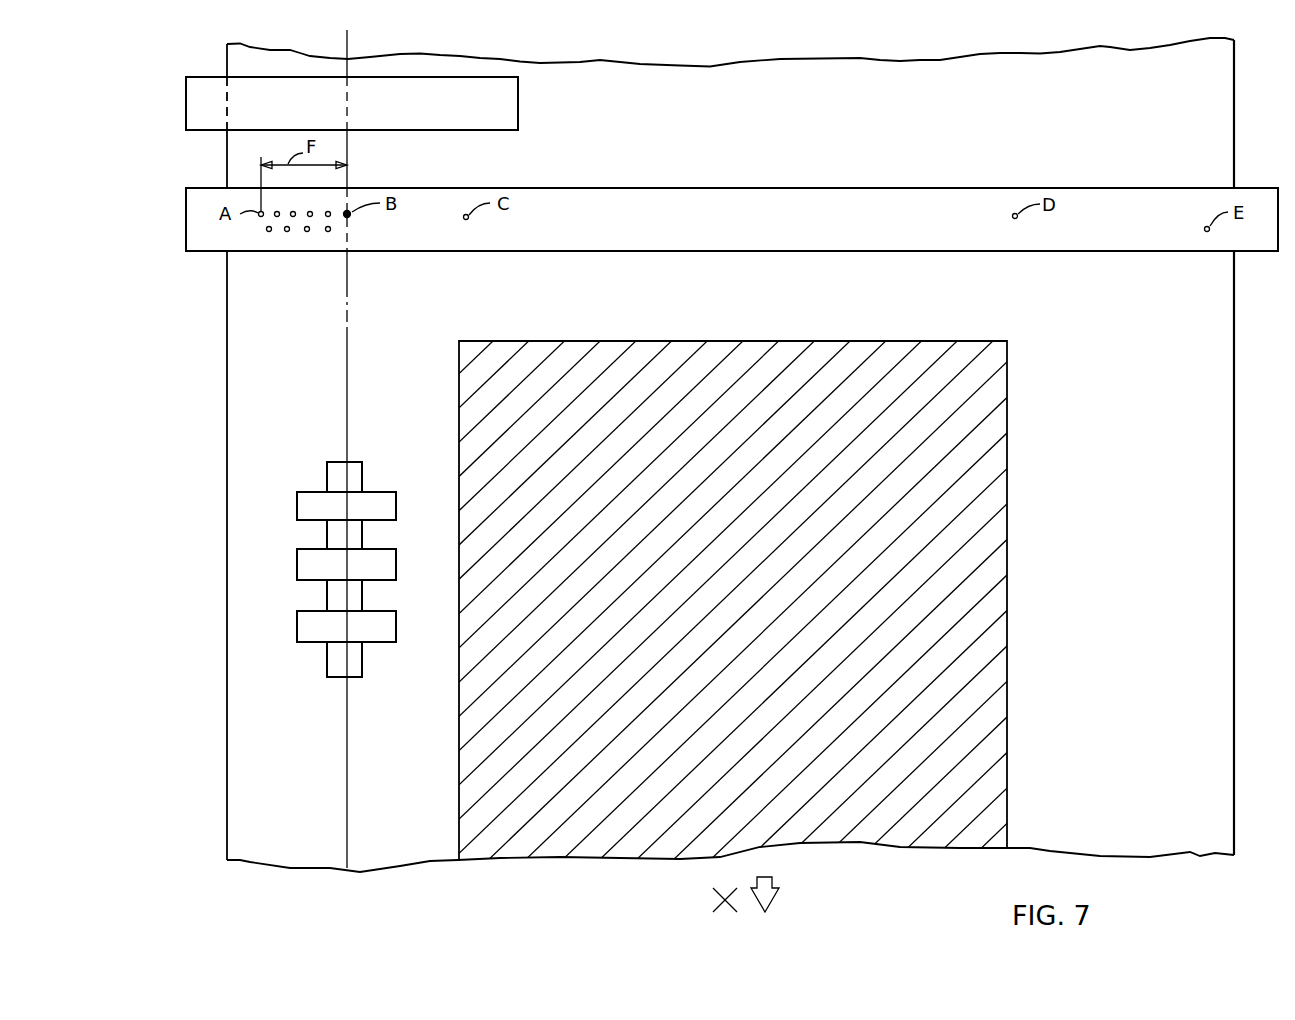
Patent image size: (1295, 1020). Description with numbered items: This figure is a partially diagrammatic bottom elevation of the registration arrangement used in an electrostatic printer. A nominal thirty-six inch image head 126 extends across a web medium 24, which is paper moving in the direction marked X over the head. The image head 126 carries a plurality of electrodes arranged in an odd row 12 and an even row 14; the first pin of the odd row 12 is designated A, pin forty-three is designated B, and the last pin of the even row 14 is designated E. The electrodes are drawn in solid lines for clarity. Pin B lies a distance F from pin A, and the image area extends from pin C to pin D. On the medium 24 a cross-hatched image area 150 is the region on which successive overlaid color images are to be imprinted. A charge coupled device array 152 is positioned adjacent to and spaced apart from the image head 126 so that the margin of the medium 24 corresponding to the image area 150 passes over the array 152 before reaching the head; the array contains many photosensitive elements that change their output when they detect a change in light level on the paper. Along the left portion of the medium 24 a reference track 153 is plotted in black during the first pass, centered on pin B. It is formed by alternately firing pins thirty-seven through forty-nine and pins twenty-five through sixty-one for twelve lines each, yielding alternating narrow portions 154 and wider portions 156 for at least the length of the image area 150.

The odd row 12 is at (202, 214).
The even row 14 is at (202, 233).
The web medium 24 is at (1077, 314).
The image head 126 is at (740, 233).
The image area 150 is at (768, 334).
The CCD array 152 is at (519, 100).
The reference track 153 is at (314, 466).
The narrow portions 154 is at (319, 535).
The wider portions 156 is at (289, 507).